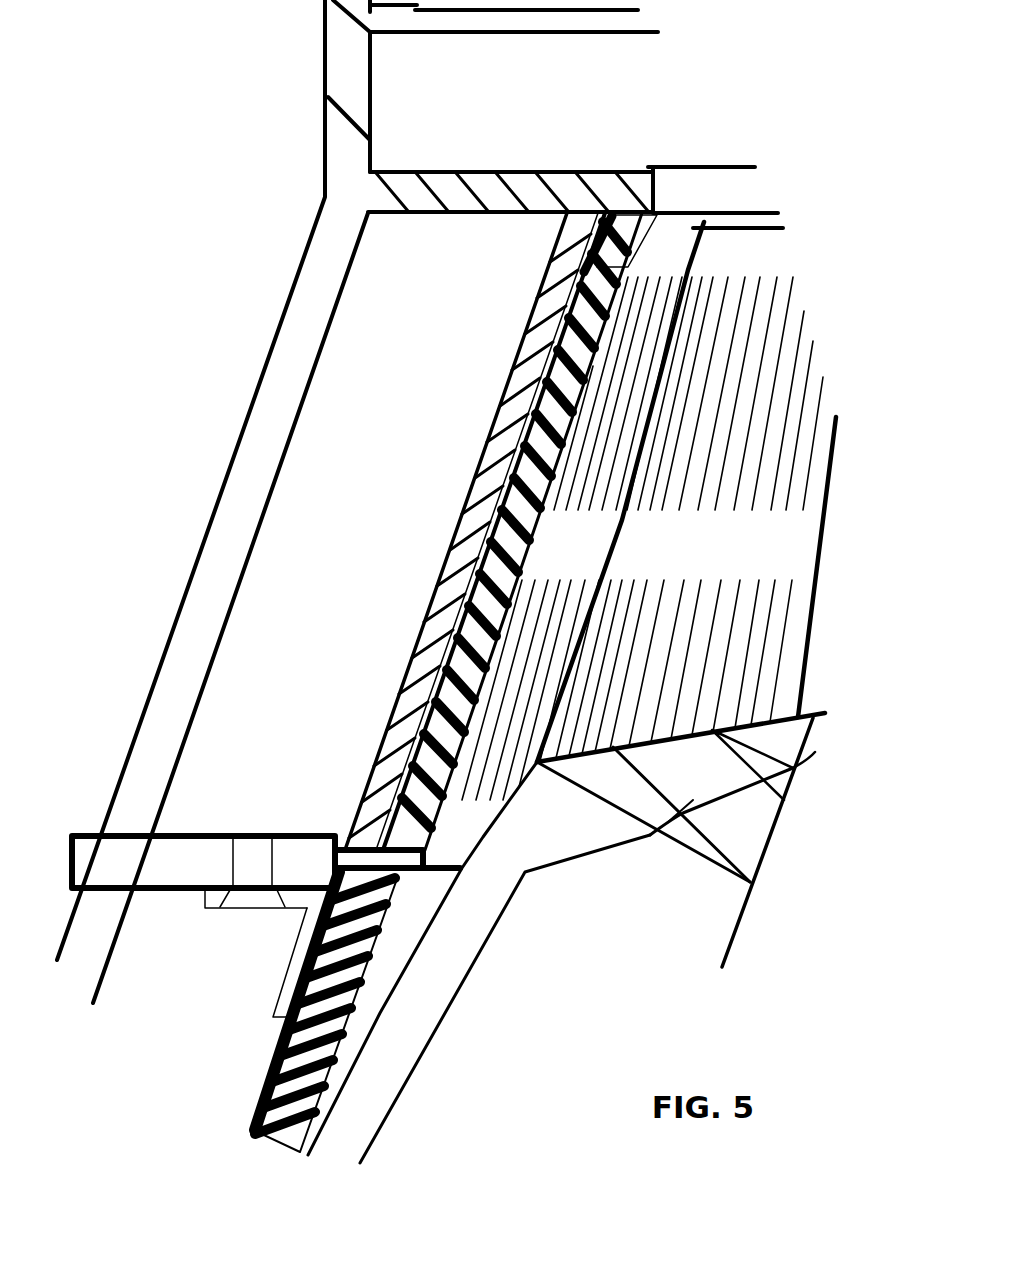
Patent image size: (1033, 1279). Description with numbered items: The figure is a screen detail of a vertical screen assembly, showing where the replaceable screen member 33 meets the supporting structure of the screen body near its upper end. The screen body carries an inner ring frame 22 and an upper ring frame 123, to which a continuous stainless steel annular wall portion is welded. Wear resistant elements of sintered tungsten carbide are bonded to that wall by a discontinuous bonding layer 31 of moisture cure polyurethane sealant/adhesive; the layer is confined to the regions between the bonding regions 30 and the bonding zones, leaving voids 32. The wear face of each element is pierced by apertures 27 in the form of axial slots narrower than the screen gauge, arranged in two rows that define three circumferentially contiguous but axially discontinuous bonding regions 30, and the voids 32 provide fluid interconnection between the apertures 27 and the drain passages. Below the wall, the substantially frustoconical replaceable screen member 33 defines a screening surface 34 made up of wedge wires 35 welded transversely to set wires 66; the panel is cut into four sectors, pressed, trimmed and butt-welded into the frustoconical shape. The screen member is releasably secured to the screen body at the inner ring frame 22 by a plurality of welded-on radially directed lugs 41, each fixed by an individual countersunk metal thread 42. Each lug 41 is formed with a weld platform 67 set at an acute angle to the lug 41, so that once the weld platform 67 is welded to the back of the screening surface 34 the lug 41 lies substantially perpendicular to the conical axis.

The inner ring frame 22 is at (175, 857).
The upper ring frame 123 is at (440, 195).
The apertures 27 is at (747, 673).
The bonding regions 30 is at (712, 258).
The discontinuous bonding layer 31 is at (560, 255).
The voids 32 is at (537, 382).
The replaceable screen member 33 is at (285, 1020).
The screening surface 34 is at (353, 1013).
The wedge wires 35 is at (300, 1093).
The lugs 41 is at (205, 902).
The countersunk metal threads 42 is at (245, 900).
The set wires 66 is at (283, 1040).
The weld platform 67 is at (300, 932).